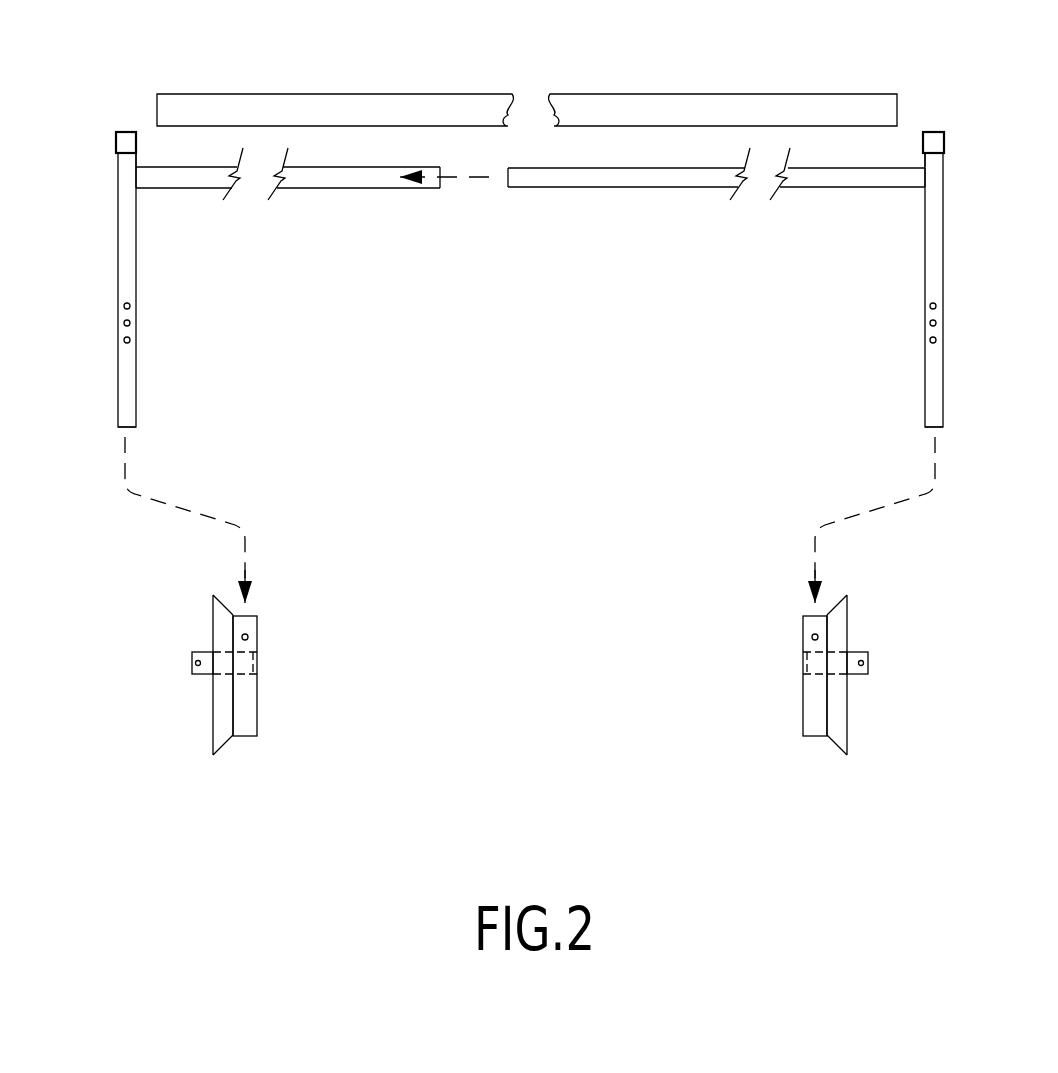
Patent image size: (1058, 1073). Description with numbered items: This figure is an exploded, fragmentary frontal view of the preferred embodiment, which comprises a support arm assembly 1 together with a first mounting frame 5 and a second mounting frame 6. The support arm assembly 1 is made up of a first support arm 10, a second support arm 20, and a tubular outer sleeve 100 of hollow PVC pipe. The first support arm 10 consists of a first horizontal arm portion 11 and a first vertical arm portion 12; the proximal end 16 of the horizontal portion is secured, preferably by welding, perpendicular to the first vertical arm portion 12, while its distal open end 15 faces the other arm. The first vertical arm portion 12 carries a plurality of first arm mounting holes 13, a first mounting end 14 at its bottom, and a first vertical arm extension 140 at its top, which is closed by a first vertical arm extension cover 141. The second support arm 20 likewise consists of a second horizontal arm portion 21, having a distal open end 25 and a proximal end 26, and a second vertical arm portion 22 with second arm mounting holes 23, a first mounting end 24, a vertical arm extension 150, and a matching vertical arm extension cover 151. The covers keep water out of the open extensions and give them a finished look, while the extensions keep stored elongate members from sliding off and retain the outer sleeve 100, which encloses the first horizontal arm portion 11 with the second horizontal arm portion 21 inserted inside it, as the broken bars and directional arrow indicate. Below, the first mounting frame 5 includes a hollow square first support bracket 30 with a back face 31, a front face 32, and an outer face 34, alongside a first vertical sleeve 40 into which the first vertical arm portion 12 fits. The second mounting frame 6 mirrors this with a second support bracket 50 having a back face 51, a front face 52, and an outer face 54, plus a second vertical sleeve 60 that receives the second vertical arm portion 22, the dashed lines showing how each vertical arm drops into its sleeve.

The support arm assembly 1 is at (117, 90).
The outer sleeve 100 is at (620, 94).
The first support arm 10 is at (250, 223).
The first horizontal arm portion 11 is at (302, 177).
The first vertical arm portion 12 is at (137, 260).
The first arm mounting holes 13 is at (130, 340).
The first mounting end 14 is at (137, 425).
The distal open end 15 is at (440, 185).
The proximal end 16 is at (137, 190).
The first vertical arm extension 140 is at (137, 160).
The first vertical arm extension cover 141 is at (126, 132).
The second support arm 20 is at (798, 223).
The second horizontal arm portion 21 is at (625, 177).
The second vertical arm portion 22 is at (925, 260).
The second arm mounting holes 23 is at (930, 340).
The first mounting end 24 is at (925, 425).
The distal open end 25 is at (508, 185).
The proximal end 26 is at (922, 190).
The vertical arm extension 150 is at (922, 160).
The vertical arm extension cover 151 is at (933, 132).
The first mounting frame 5 is at (260, 803).
The first support bracket 30 is at (204, 752).
The back face 31 is at (213, 635).
The front face 32 is at (233, 698).
The outer face 34 is at (225, 732).
The first vertical sleeve 40 is at (267, 688).
The second mounting frame 6 is at (800, 803).
The second support bracket 50 is at (856, 752).
The back face 51 is at (847, 635).
The front face 52 is at (827, 698).
The outer face 54 is at (835, 732).
The second vertical sleeve 60 is at (793, 688).